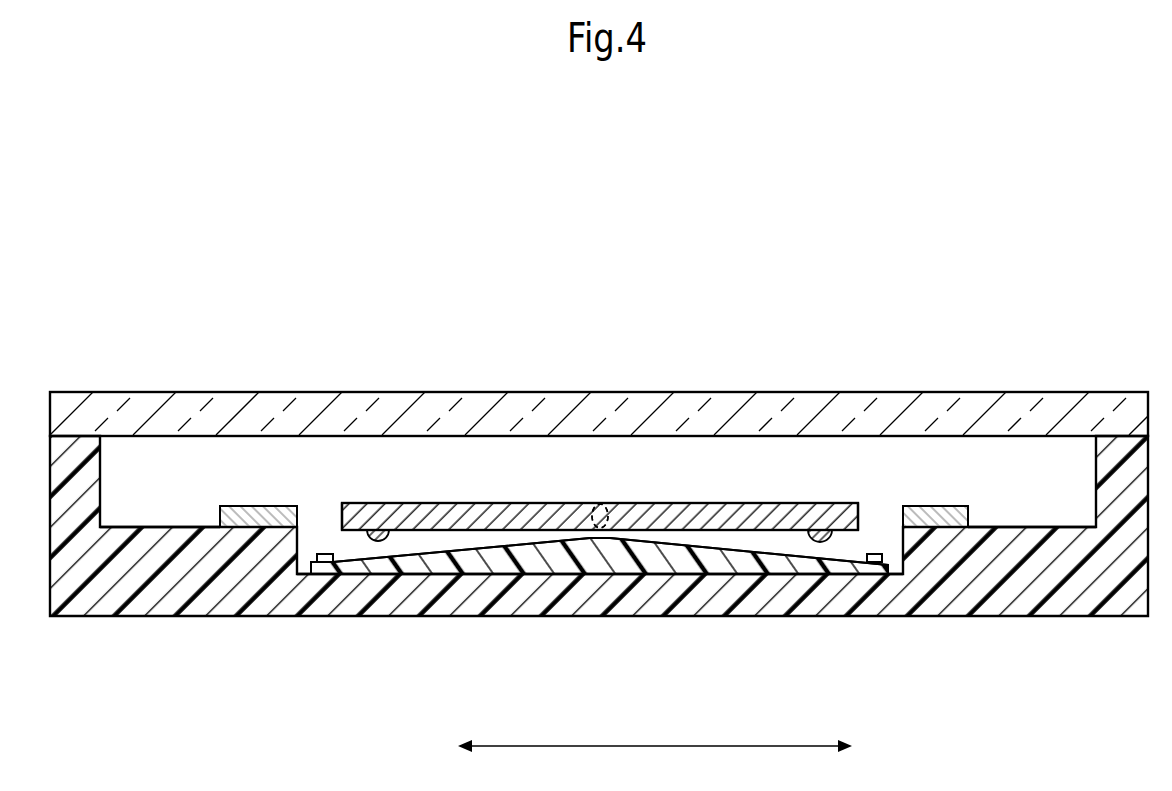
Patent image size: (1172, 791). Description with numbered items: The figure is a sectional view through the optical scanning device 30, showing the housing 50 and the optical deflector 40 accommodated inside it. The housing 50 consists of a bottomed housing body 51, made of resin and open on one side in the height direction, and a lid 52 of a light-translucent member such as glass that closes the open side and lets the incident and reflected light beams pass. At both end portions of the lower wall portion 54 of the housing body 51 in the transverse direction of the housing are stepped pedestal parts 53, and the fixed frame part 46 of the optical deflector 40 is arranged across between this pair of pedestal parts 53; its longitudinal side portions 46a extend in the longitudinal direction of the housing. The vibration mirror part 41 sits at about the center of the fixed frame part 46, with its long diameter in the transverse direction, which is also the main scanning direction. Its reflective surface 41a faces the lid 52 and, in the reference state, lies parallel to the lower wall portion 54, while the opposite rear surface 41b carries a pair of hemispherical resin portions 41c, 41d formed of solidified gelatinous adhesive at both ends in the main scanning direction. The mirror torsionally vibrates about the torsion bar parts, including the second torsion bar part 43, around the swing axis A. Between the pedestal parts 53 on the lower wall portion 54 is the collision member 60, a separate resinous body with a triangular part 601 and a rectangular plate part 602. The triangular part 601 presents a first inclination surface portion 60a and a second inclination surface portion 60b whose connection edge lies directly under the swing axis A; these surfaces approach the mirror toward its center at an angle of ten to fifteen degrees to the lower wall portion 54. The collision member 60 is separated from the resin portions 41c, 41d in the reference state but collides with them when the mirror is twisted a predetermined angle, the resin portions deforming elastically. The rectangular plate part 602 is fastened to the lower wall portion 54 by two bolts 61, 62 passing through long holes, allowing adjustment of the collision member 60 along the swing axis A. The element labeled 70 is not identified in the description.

The optical scanning device 30 is at (125, 296).
The housing 50 is at (92, 333).
The housing body 51 is at (62, 502).
The lid 52 is at (72, 408).
The pedestal parts 53 is at (153, 527).
The fixed frame part 46 is at (262, 503).
The longitudinal side portions 46a is at (237, 506).
The bolt 61 is at (325, 553).
The bolt 62 is at (878, 553).
The collision member 60 is at (473, 545).
The triangular part 601 is at (549, 544).
The rectangular plate part 602 is at (540, 575).
The first inclination surface portion 60a is at (376, 519).
The second inclination surface portion 60b is at (817, 530).
The optical deflector 40 is at (423, 500).
The vibration mirror part 41 is at (677, 501).
The reflective surface 41a is at (713, 503).
The rear surface 41b is at (728, 531).
The resin portion 41c is at (372, 537).
The resin portion 41d is at (798, 530).
The second torsion bar part 43 is at (597, 505).
The swing axis A is at (607, 503).
The reflective layer 70 is at (677, 531).
The lower wall portion 54 is at (385, 538).